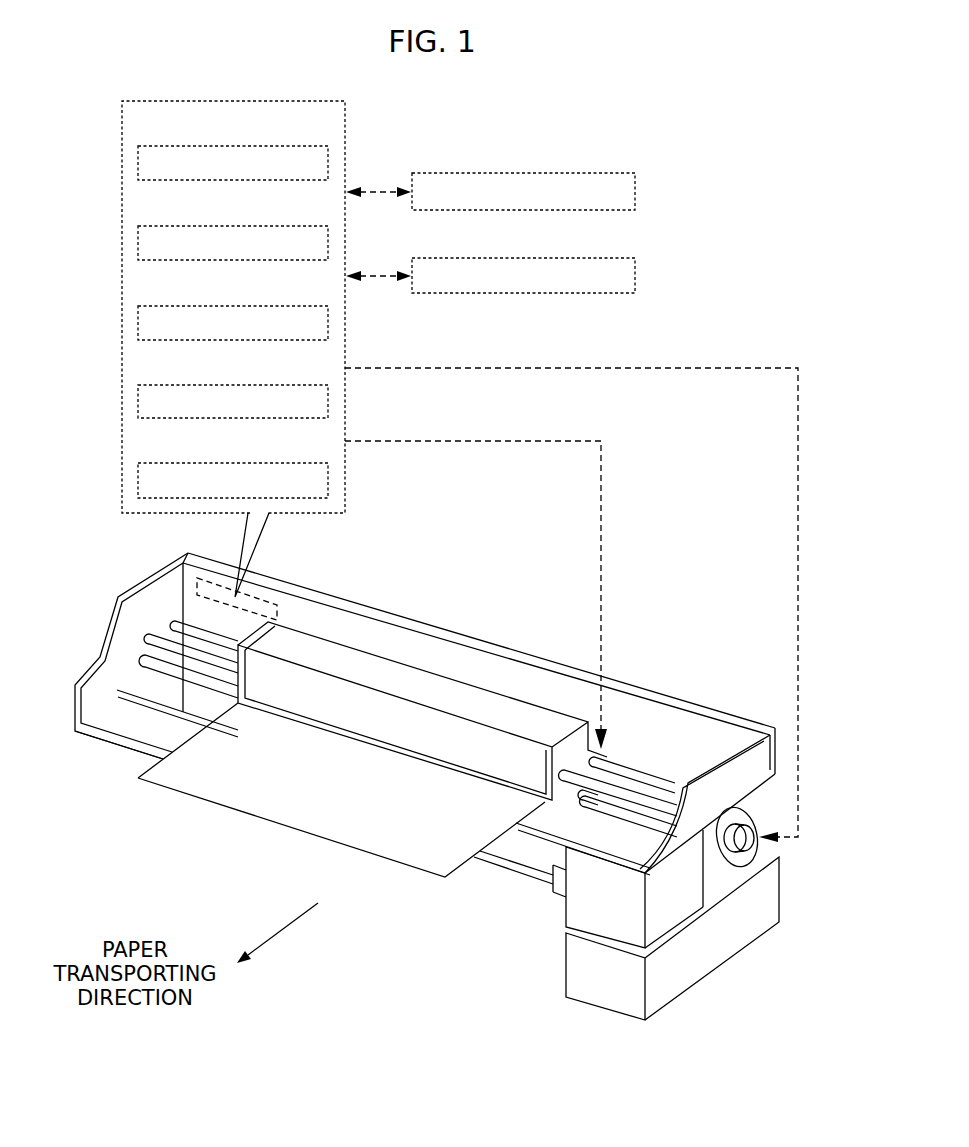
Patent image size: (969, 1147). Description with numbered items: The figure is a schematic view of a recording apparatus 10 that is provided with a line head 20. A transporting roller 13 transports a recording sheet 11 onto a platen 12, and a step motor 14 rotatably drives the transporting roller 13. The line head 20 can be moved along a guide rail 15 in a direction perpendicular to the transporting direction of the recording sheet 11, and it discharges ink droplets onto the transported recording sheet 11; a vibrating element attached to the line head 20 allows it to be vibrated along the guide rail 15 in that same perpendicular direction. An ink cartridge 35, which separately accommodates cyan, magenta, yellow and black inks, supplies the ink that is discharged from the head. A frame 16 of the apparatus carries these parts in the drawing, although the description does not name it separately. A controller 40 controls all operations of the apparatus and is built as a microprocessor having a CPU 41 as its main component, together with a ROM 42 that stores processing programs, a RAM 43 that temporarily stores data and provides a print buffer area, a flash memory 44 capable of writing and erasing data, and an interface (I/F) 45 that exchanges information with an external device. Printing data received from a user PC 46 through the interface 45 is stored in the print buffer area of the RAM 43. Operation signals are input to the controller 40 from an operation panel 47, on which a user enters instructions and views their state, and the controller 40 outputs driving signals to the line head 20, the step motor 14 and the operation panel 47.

The recording apparatus 10 is at (679, 345).
The recording sheet 11 is at (250, 797).
The platen 12 is at (178, 698).
The transporting roller 13 is at (150, 667).
The step motor 14 is at (732, 855).
The guide rail 15 is at (668, 783).
The frame 16 is at (372, 612).
The line head 20 is at (590, 797).
The ink cartridge 35 is at (433, 692).
The controller 40 is at (262, 597).
The CPU 41 is at (292, 146).
The ROM 42 is at (292, 226).
The RAM 43 is at (292, 306).
The flash memory 44 is at (292, 385).
The interface (I/F) 45 is at (292, 463).
The user PC 46 is at (600, 173).
The operation panel 47 is at (600, 258).